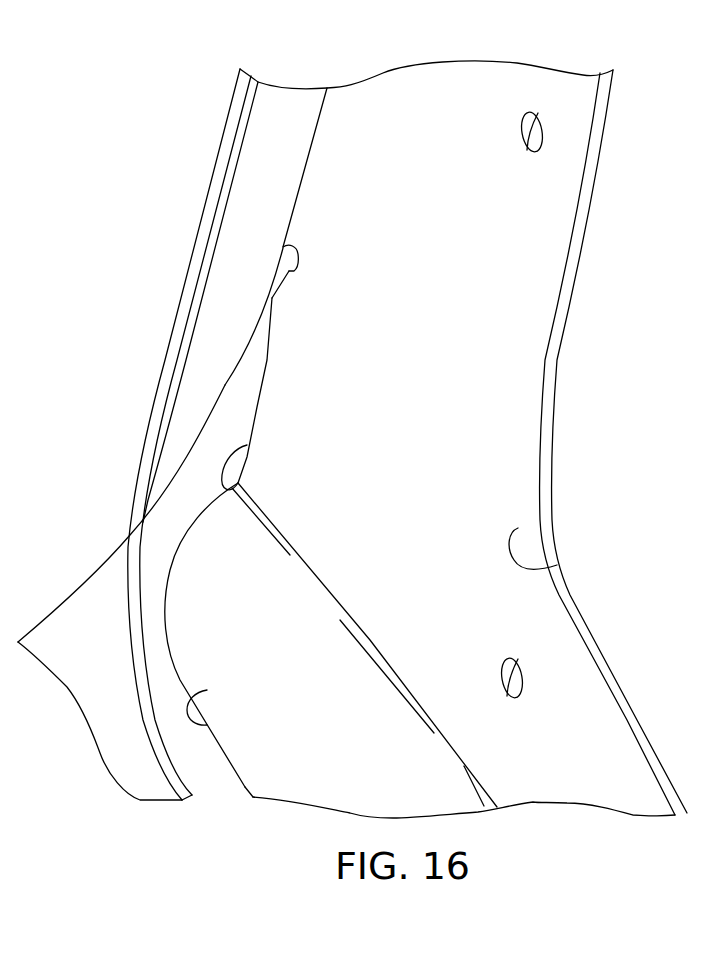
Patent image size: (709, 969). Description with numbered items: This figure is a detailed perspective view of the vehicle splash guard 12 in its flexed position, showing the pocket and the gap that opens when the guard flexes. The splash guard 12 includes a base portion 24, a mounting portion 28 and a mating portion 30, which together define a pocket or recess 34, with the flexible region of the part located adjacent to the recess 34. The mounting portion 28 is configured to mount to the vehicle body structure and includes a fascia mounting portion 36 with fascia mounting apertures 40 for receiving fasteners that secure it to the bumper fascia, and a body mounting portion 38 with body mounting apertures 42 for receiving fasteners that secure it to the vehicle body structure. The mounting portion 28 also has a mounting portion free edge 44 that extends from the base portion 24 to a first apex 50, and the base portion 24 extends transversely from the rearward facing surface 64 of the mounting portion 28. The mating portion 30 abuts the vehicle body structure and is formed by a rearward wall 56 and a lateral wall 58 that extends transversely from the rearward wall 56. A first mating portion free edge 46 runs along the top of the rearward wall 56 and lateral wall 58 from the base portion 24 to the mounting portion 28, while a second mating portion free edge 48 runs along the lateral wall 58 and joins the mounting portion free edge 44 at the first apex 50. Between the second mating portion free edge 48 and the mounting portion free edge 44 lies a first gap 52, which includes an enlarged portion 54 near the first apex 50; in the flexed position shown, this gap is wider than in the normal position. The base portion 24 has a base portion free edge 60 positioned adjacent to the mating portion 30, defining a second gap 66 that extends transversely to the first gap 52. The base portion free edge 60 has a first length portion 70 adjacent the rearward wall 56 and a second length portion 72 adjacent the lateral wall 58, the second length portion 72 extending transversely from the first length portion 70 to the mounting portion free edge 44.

The vehicle splash guard 12 is at (145, 142).
The base portion 24 is at (273, 673).
The mounting portion 28 is at (473, 408).
The mating portion 30 is at (202, 228).
The recess 34 is at (310, 493).
The fascia mounting portion 36 is at (575, 735).
The body mounting portion 38 is at (558, 95).
The fascia mounting apertures 40 is at (497, 682).
The body mounting apertures 42 is at (523, 137).
The mounting portion free edge 44 is at (273, 342).
The first mating portion free edge 46 is at (160, 435).
The second mating portion free edge 48 is at (263, 312).
The first apex 50 is at (292, 248).
The first gap 52 is at (222, 390).
The enlarged portion 54 is at (290, 257).
The rearward wall 56 is at (178, 328).
The lateral wall 58 is at (285, 112).
The base portion free edge 60 is at (233, 773).
The rearward facing surface 64 is at (557, 565).
The second gap 66 is at (193, 738).
The first length portion 70 is at (207, 690).
The second length portion 72 is at (247, 445).